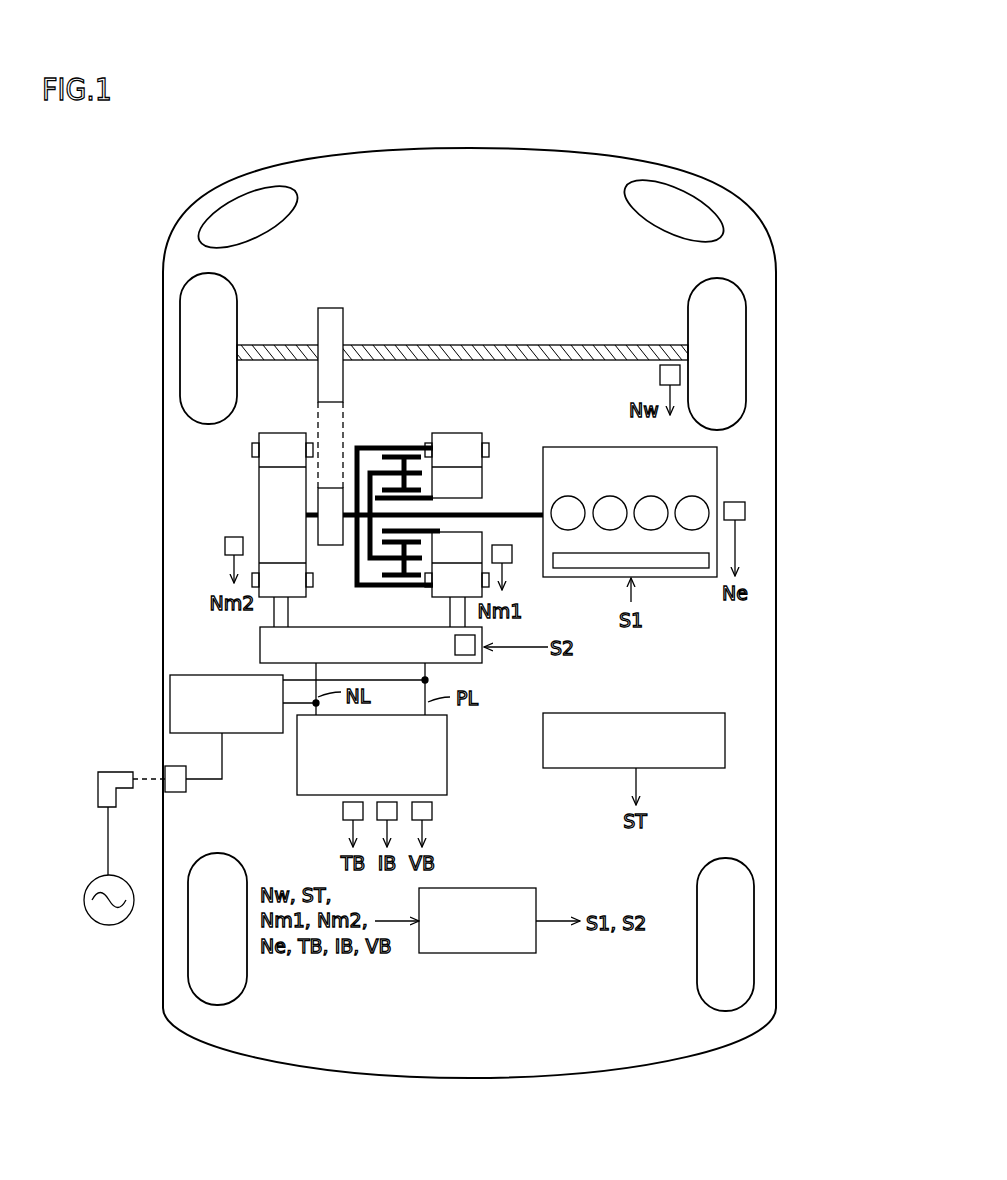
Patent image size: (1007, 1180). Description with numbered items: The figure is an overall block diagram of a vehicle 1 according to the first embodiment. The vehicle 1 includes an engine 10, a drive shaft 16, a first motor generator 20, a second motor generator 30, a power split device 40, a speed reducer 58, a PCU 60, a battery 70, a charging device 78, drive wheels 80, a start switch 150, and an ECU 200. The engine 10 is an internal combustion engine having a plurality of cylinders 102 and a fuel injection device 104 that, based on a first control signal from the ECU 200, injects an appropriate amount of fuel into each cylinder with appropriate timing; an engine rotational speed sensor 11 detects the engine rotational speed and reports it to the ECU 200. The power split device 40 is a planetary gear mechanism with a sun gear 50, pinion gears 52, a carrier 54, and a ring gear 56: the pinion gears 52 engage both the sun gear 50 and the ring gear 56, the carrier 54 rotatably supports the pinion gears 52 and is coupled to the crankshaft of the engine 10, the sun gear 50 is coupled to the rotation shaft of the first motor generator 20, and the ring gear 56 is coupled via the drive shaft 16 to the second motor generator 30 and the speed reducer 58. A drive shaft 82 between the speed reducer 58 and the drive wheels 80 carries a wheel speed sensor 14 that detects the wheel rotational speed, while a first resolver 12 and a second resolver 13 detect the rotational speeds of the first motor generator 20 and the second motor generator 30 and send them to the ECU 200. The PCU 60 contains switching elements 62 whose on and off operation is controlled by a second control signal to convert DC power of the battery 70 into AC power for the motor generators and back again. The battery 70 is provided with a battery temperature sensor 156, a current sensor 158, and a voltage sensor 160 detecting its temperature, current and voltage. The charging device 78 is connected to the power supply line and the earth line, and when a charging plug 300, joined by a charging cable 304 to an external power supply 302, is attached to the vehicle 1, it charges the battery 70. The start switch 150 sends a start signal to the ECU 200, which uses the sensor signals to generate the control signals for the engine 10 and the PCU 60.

The vehicle 1 is at (435, 118).
The engine 10 is at (630, 511).
The engine rotational speed sensor 11 is at (735, 502).
The first resolver 12 is at (506, 546).
The second resolver 13 is at (234, 537).
The wheel speed sensor 14 is at (660, 377).
The drive shaft 16 is at (351, 523).
The first motor generator 20 is at (459, 433).
The second motor generator 30 is at (286, 433).
The power split device 40 is at (398, 499).
The sun gear 50 is at (411, 527).
The pinion gears 52 is at (410, 578).
The carrier 54 is at (372, 562).
The ring gear 56 is at (364, 448).
The speed reducer 58 is at (333, 308).
The PCU (Power Control Unit) 60 is at (360, 657).
The switching elements 62 is at (470, 656).
The battery 70 is at (297, 755).
The charging device 78 is at (170, 693).
The drive wheels 80 is at (700, 284).
The drive shaft 82 is at (583, 345).
The cylinders 102 is at (650, 497).
The fuel injection device 104 is at (674, 568).
The start switch 150 is at (676, 713).
The battery temperature sensor 156 is at (343, 811).
The current sensor 158 is at (389, 802).
The voltage sensor 160 is at (433, 811).
The ECU (Electronic Control Unit) 200 is at (476, 955).
The charging plug 300 is at (116, 772).
The external power supply 302 is at (119, 877).
The charging cable 304 is at (108, 827).